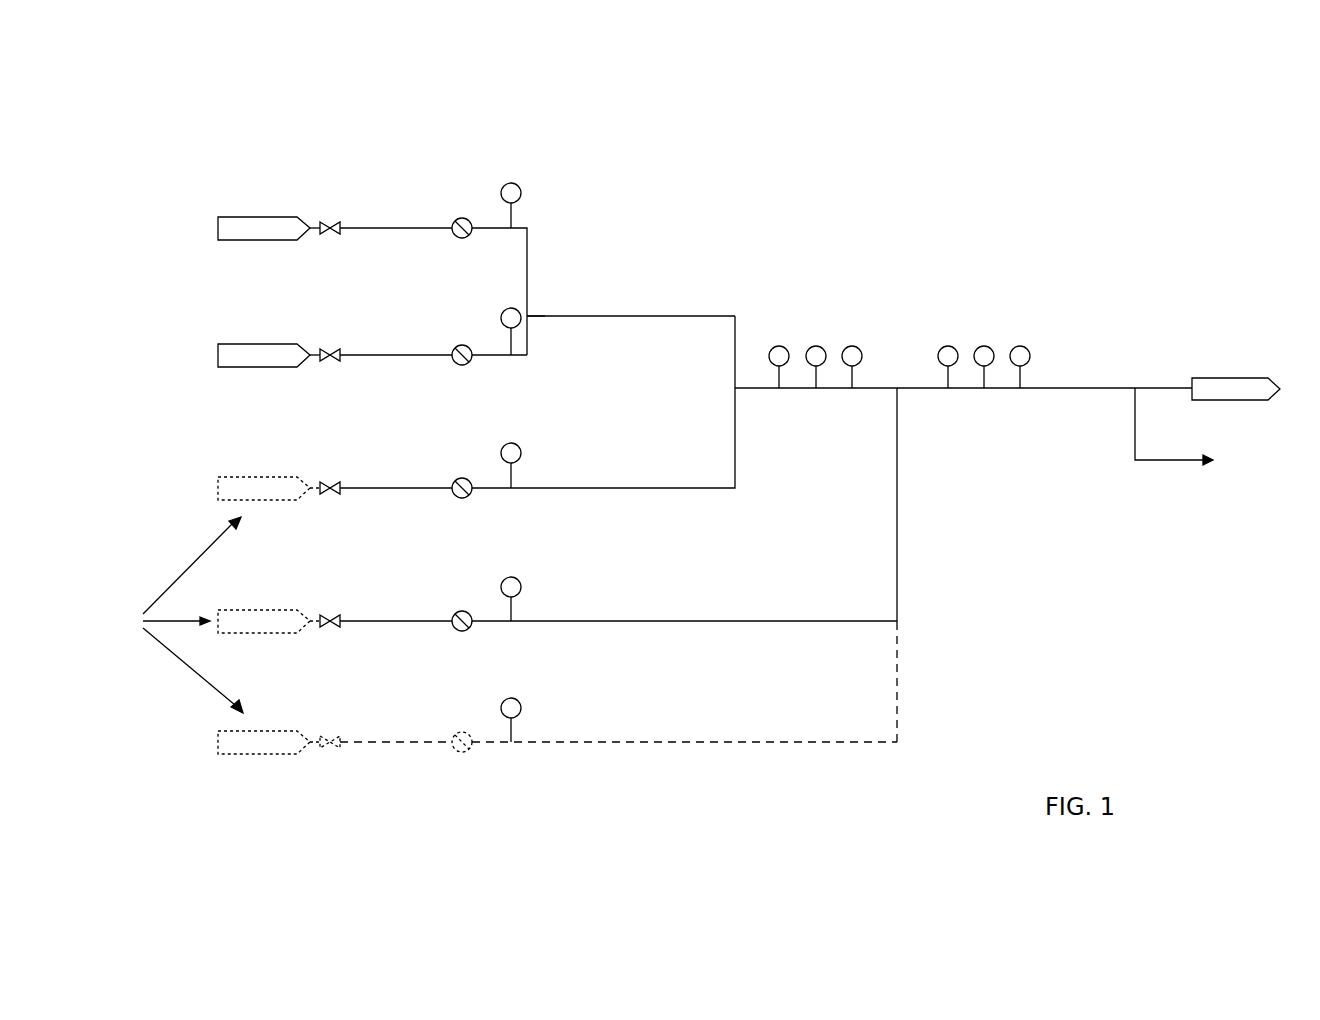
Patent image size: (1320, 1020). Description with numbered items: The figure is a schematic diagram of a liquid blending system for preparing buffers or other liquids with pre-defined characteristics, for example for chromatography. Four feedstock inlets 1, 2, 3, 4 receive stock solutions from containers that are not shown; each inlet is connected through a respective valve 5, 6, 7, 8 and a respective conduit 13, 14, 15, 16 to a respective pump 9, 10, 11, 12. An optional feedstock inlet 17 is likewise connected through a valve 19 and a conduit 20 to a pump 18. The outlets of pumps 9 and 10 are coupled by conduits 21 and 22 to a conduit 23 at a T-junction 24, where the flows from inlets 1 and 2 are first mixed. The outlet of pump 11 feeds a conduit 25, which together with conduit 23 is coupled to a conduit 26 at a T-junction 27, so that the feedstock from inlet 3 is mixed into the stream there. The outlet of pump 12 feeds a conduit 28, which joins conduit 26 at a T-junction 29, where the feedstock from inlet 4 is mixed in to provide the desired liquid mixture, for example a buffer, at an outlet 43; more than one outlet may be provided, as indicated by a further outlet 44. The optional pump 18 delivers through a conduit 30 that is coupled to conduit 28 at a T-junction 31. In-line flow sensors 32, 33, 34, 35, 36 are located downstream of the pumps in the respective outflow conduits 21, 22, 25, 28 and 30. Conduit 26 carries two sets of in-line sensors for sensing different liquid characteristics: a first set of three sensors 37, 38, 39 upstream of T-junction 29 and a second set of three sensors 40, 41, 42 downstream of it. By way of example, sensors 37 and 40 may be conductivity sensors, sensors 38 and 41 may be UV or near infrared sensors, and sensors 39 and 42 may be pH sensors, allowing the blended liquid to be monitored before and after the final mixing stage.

The feedstock inlet 1 is at (237, 228).
The feedstock inlet 2 is at (237, 353).
The feedstock inlet 3 is at (250, 482).
The feedstock inlet 4 is at (247, 608).
The valve 5 is at (328, 228).
The valve 6 is at (335, 353).
The valve 7 is at (330, 482).
The valve 8 is at (328, 622).
The pump 9 is at (462, 218).
The pump 10 is at (462, 345).
The pump 11 is at (461, 478).
The pump 12 is at (466, 612).
The conduit 13 is at (390, 228).
The conduit 14 is at (388, 353).
The conduit 15 is at (397, 488).
The conduit 16 is at (390, 622).
The optional feedstock inlet 17 is at (250, 753).
The pump 18 is at (457, 762).
The valve 19 is at (330, 740).
The conduit 20 is at (370, 743).
The conduit 21 is at (527, 268).
The conduit 22 is at (493, 357).
The conduit 23 is at (615, 315).
The T-junction 24 is at (527, 316).
The conduit 25 is at (627, 490).
The conduit 26 is at (826, 390).
The T-junction 27 is at (737, 391).
The conduit 28 is at (725, 623).
The T-junction 29 is at (900, 393).
The conduit 30 is at (720, 744).
The T-junction 31 is at (900, 625).
The in-line flow sensor 32 is at (512, 185).
The in-line flow sensor 33 is at (510, 308).
The in-line flow sensor 34 is at (520, 456).
The in-line flow sensor 35 is at (520, 590).
The in-line flow sensor 36 is at (520, 710).
The sensor 37 is at (782, 347).
The sensor 38 is at (817, 347).
The sensor 39 is at (855, 347).
The sensor 40 is at (948, 347).
The sensor 41 is at (985, 347).
The sensor 42 is at (1028, 350).
The outlet 43 is at (1210, 385).
The additional outlet 44 is at (1158, 462).